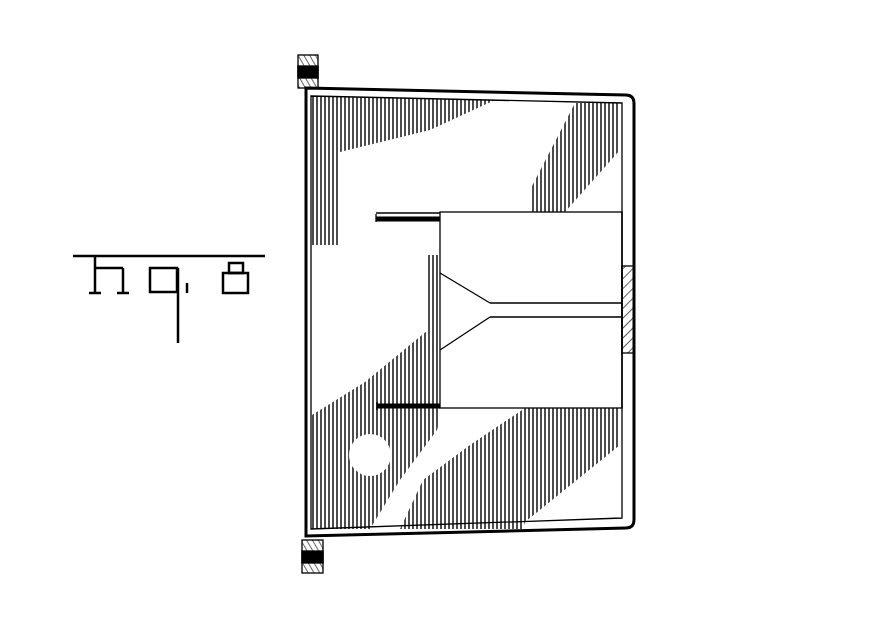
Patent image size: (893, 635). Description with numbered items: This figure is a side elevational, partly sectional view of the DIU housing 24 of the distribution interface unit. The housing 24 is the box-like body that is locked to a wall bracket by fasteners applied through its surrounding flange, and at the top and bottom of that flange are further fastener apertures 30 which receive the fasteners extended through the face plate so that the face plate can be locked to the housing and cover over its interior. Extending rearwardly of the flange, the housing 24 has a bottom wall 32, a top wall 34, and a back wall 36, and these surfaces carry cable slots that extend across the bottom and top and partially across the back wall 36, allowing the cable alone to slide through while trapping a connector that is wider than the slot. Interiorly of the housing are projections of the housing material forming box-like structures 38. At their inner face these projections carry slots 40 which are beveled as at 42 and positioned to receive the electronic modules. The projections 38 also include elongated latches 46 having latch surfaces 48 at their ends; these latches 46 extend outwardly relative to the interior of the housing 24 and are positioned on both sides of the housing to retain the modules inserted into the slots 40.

The DIU housing 24 is at (648, 443).
The fastener apertures 30 is at (298, 76).
The bottom wall 32 is at (436, 529).
The top wall 34 is at (524, 92).
The back wall 36 is at (636, 292).
The box-like structures 38 is at (540, 210).
The slots 40 is at (566, 310).
The bevel 42 is at (463, 287).
The elongated latches 46 is at (405, 213).
The latch surfaces 48 is at (378, 224).